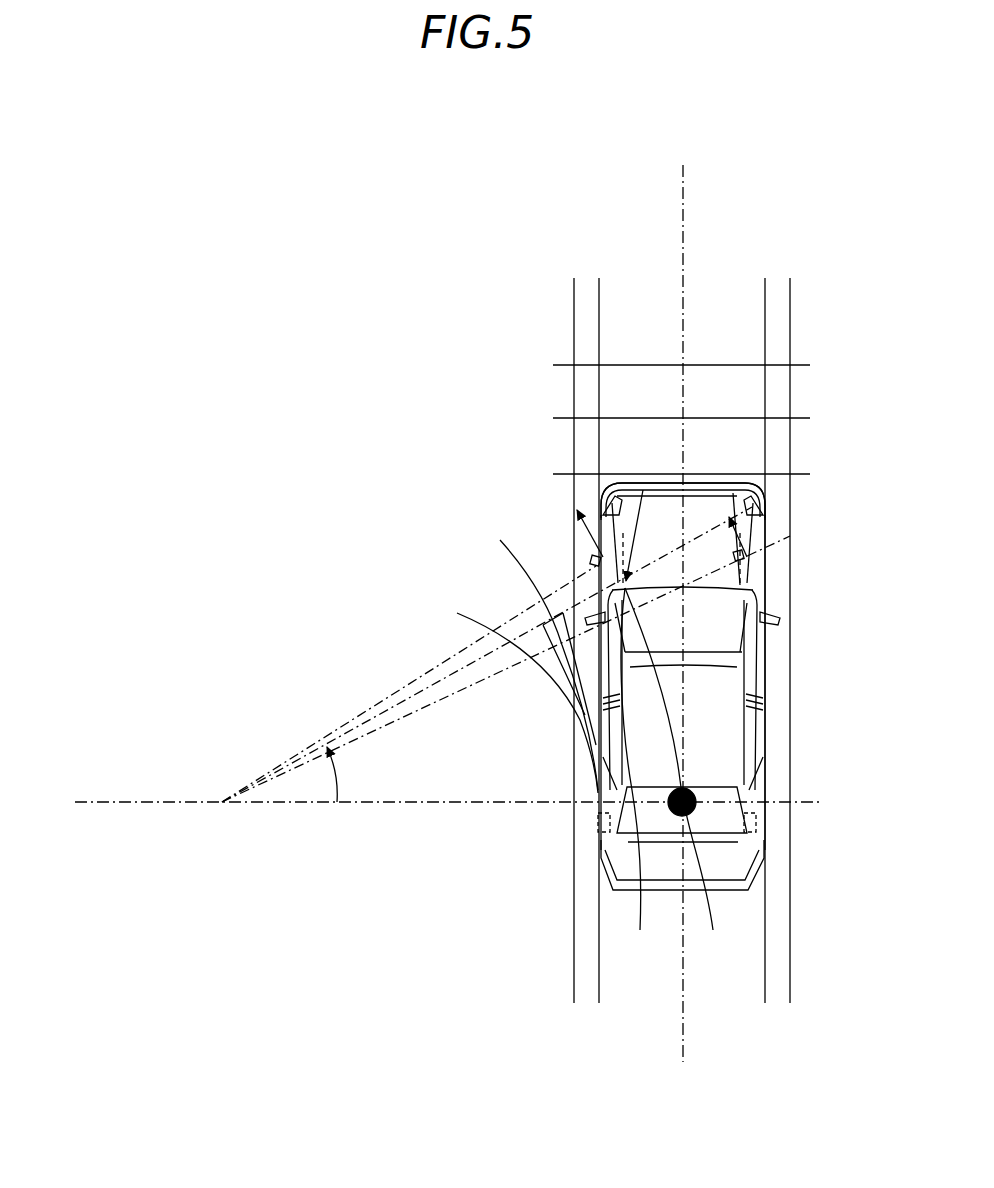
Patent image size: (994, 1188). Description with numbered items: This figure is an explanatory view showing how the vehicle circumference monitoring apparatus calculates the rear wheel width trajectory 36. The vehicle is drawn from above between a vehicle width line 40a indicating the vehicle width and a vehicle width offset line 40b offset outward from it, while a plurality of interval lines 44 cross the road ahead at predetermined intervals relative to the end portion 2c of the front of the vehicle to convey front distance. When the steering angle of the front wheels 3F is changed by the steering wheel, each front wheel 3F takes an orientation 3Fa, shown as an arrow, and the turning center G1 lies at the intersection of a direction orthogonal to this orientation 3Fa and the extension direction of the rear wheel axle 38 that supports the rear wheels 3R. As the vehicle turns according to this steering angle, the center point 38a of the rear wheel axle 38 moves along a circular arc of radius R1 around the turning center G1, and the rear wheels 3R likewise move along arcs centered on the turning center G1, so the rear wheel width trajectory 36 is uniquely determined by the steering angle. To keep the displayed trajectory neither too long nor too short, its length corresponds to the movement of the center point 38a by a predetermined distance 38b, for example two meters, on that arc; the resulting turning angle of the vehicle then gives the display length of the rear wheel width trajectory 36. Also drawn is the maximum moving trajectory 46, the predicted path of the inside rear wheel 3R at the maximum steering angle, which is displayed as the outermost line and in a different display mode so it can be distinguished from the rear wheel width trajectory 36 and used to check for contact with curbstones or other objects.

The vehicle width line 40a is at (600, 300).
The vehicle width offset line 40b is at (574, 322).
The interval lines 44 is at (645, 365).
The end portion of the front of the vehicle 2c is at (652, 483).
The front wheel 3F is at (590, 560).
The orientation of the front wheel 3Fa is at (577, 535).
The rear wheel width trajectory 36 is at (512, 560).
The maximum moving trajectory 46 is at (552, 690).
The predetermined distance 38b is at (705, 668).
The rear wheel axle 38 is at (637, 776).
The center point of the rear wheel axle 38a is at (682, 727).
The rear wheel 3R is at (592, 815).
The turning center G1 is at (223, 805).
The radius R1 is at (390, 805).